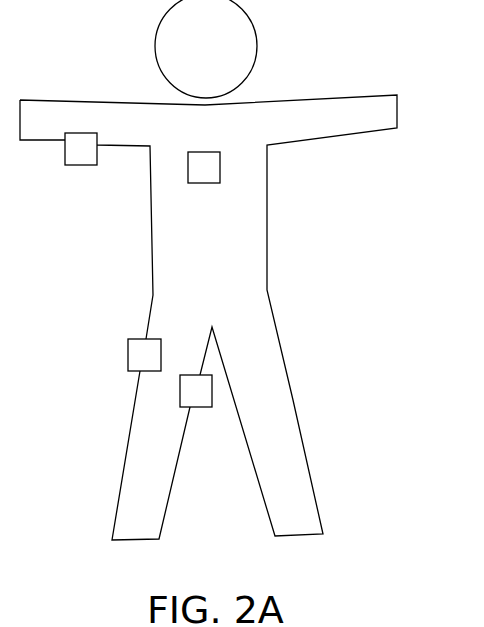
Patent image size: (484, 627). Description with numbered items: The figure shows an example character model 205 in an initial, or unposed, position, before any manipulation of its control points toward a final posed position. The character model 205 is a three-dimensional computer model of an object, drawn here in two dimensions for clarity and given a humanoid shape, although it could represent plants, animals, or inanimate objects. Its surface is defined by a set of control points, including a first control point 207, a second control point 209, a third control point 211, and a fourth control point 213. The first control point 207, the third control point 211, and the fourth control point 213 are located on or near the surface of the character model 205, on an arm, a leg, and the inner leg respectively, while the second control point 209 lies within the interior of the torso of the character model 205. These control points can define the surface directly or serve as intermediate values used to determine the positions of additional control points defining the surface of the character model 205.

The character model 205 is at (254, 265).
The control point P1 207 is at (66, 185).
The control point P2 209 is at (220, 172).
The control point P3 211 is at (128, 355).
The control point P4 213 is at (193, 407).